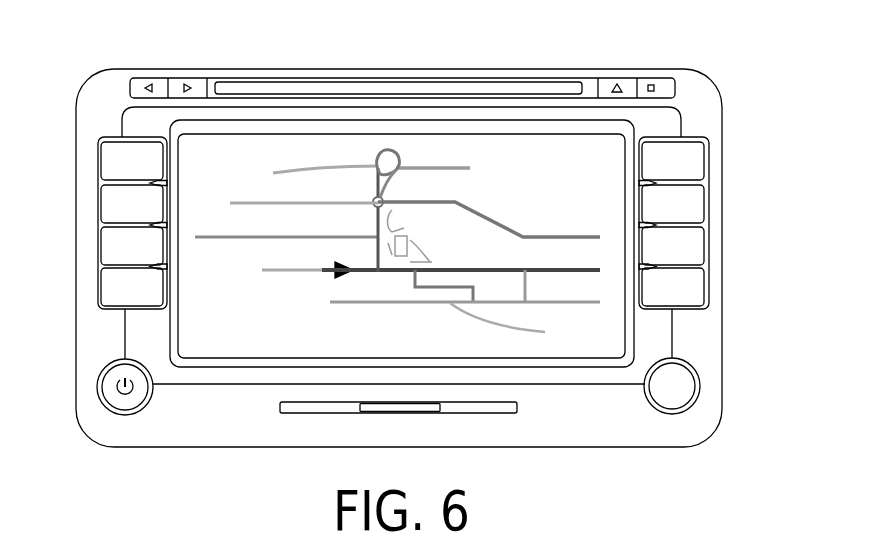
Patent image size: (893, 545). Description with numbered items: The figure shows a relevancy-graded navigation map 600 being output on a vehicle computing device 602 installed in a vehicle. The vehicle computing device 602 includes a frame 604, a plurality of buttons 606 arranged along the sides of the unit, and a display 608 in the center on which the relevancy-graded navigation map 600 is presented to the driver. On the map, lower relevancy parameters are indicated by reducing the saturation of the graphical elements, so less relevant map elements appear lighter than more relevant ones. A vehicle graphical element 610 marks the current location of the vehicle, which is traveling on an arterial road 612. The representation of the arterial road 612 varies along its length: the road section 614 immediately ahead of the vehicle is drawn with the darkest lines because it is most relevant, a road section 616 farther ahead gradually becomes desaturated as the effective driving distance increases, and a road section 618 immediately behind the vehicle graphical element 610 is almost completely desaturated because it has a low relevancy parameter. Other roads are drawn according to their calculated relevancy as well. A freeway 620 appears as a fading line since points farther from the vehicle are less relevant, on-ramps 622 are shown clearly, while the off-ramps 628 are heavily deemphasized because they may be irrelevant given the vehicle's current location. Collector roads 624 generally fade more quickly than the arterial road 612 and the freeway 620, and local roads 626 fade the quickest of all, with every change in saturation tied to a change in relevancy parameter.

The relevancy-graded navigation map 600 is at (196, 157).
The vehicle computing device 602 is at (786, 141).
The frame 604 is at (655, 68).
The plurality of buttons 606 is at (709, 236).
The display 608 is at (622, 130).
The vehicle graphical element 610 is at (343, 275).
The arterial road 612 is at (448, 273).
The road section 614 is at (288, 270).
The road section 616 is at (392, 273).
The road section 618 is at (538, 273).
The freeway 620 is at (463, 168).
The on-ramps 622 is at (398, 155).
The collector roads 624 is at (490, 304).
The local roads 626 is at (393, 213).
The off-ramps 628 is at (363, 157).